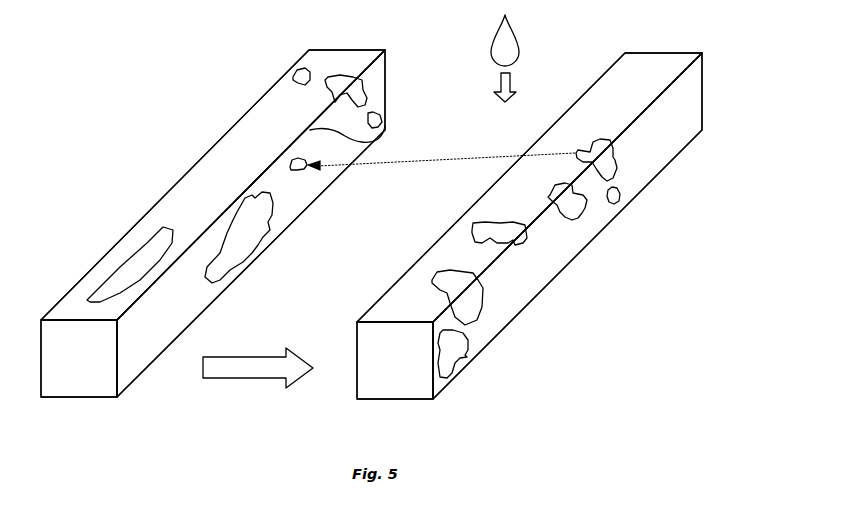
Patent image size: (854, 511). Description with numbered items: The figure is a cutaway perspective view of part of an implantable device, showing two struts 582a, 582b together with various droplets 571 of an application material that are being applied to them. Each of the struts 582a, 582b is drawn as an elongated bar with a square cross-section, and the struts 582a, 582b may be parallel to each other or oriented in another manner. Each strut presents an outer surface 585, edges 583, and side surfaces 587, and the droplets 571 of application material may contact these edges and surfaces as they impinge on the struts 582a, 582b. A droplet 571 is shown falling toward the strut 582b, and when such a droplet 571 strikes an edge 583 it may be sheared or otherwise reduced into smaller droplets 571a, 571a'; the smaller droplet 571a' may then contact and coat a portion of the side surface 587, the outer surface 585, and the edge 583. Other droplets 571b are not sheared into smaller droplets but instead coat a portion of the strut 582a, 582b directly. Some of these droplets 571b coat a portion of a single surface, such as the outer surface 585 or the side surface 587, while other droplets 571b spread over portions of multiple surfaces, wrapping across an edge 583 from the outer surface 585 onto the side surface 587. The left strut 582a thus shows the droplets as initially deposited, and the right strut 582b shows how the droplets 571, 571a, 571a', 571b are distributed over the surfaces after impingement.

The droplet of application material 571 is at (539, 38).
The smaller droplet 571a is at (524, 121).
The smaller droplet 571a' is at (465, 135).
The unsheared droplet 571b is at (107, 262).
The strut 582a is at (159, 152).
The strut 582b is at (446, 220).
The edge 583 is at (368, 154).
The outer surface 585 is at (250, 138).
The side surface 587 is at (167, 312).